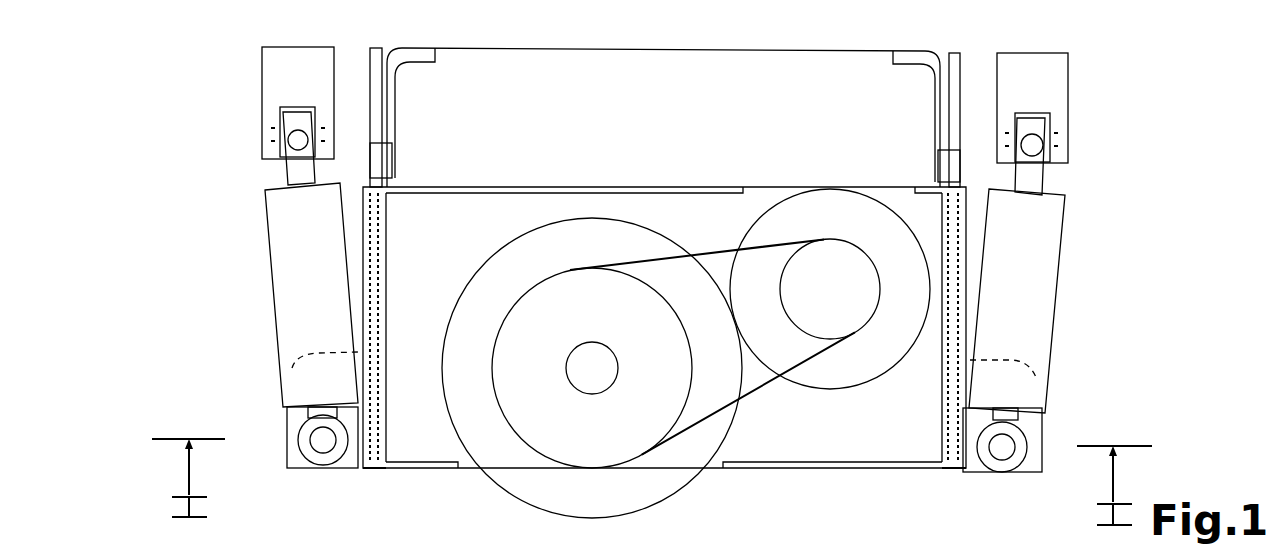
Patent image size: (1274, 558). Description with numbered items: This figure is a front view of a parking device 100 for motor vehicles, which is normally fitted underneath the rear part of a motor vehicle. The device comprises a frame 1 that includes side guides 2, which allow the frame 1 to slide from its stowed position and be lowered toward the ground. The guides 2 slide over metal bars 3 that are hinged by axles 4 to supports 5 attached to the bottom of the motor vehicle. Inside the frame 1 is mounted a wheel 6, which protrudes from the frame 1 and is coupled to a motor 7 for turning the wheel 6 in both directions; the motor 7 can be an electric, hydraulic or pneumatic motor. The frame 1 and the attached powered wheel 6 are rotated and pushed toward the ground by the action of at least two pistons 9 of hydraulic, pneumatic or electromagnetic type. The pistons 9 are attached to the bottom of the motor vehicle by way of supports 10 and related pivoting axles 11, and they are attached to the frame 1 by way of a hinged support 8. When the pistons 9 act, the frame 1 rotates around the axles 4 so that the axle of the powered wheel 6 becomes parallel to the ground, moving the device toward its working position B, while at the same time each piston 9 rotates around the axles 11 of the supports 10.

The parking device 100 is at (240, 68).
The frame 1 is at (763, 190).
The side guides 2 is at (385, 393).
The metal bars 3 is at (370, 467).
The axles 4 is at (392, 158).
The supports 5 is at (390, 95).
The wheel 6 is at (605, 230).
The motor 7 is at (857, 368).
The hinged support 8 is at (287, 457).
The pistons 9 is at (285, 255).
The supports 10 is at (275, 95).
The pivoting axles 11 is at (292, 135).
The working position B is at (215, 224).